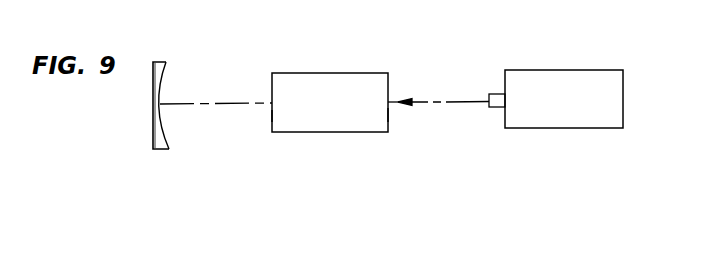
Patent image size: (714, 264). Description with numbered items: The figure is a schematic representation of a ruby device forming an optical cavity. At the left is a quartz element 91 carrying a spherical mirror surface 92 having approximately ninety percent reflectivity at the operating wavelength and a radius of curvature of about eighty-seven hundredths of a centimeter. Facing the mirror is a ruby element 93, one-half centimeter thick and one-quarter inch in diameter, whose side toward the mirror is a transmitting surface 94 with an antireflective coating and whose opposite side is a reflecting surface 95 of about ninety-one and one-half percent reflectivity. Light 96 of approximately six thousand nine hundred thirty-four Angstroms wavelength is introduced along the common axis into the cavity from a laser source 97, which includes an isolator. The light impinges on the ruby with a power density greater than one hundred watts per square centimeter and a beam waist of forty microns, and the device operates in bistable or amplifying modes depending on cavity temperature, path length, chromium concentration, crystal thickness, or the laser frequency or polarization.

The quartz element 91 is at (165, 150).
The spherical mirror surface 92 is at (160, 84).
The ruby element 93 is at (345, 73).
The transmitting surface 94 is at (272, 115).
The reflecting surface 95 is at (389, 115).
The light 96 is at (453, 101).
The laser source 97 is at (585, 70).